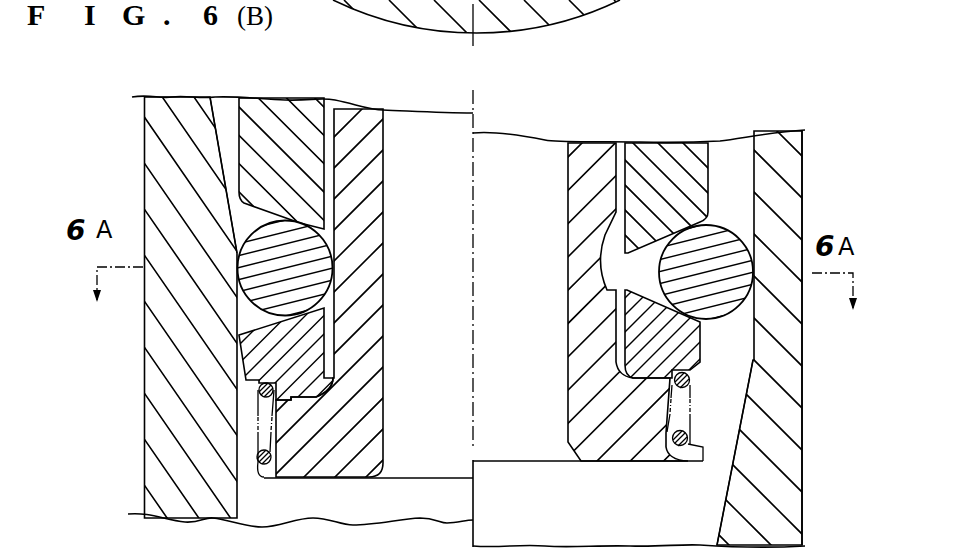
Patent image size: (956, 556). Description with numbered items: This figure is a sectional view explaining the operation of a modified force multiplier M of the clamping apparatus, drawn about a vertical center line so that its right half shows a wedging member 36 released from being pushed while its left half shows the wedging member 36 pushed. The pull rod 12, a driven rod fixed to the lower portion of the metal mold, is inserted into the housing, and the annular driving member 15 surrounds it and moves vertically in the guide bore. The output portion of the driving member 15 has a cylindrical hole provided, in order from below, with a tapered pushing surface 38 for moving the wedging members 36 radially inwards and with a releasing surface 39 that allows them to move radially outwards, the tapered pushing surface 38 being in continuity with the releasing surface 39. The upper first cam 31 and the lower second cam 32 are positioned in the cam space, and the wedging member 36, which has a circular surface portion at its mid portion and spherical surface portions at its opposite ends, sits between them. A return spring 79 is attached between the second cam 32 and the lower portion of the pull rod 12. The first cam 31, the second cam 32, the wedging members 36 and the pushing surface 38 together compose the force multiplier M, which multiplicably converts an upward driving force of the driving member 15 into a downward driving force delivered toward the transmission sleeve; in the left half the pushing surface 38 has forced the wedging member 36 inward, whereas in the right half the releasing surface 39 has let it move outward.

The pull rod 12 is at (624, 462).
The driving member 15 is at (808, 336).
The first cam 31 is at (647, 148).
The second cam 32 is at (569, 351).
The wedging member 36 is at (721, 320).
The tapered pushing surface 38 is at (213, 110).
The releasing surface 39 is at (755, 181).
The return spring 79 is at (694, 450).
The force multiplier M is at (694, 96).